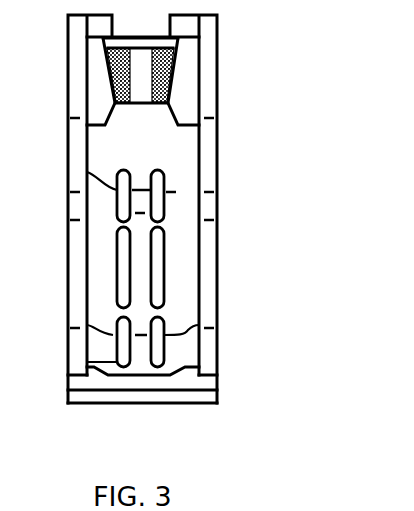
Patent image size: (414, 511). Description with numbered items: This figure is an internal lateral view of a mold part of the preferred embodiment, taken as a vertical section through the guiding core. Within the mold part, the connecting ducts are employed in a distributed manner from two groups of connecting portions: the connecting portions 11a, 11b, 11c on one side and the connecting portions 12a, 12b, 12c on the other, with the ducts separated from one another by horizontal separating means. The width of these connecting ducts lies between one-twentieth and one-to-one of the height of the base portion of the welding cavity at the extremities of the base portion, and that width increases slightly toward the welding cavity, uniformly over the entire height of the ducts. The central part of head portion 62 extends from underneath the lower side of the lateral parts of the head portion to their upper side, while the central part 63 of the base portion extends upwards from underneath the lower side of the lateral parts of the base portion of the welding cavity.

The connecting portion 11a is at (120, 355).
The connecting portion 11b is at (122, 268).
The connecting portion 11c is at (117, 213).
The connecting portion 12a is at (160, 350).
The connecting portion 12b is at (157, 263).
The connecting portion 12c is at (168, 213).
The central part of head portion 62 is at (164, 190).
The central part of base portion 63 is at (168, 367).